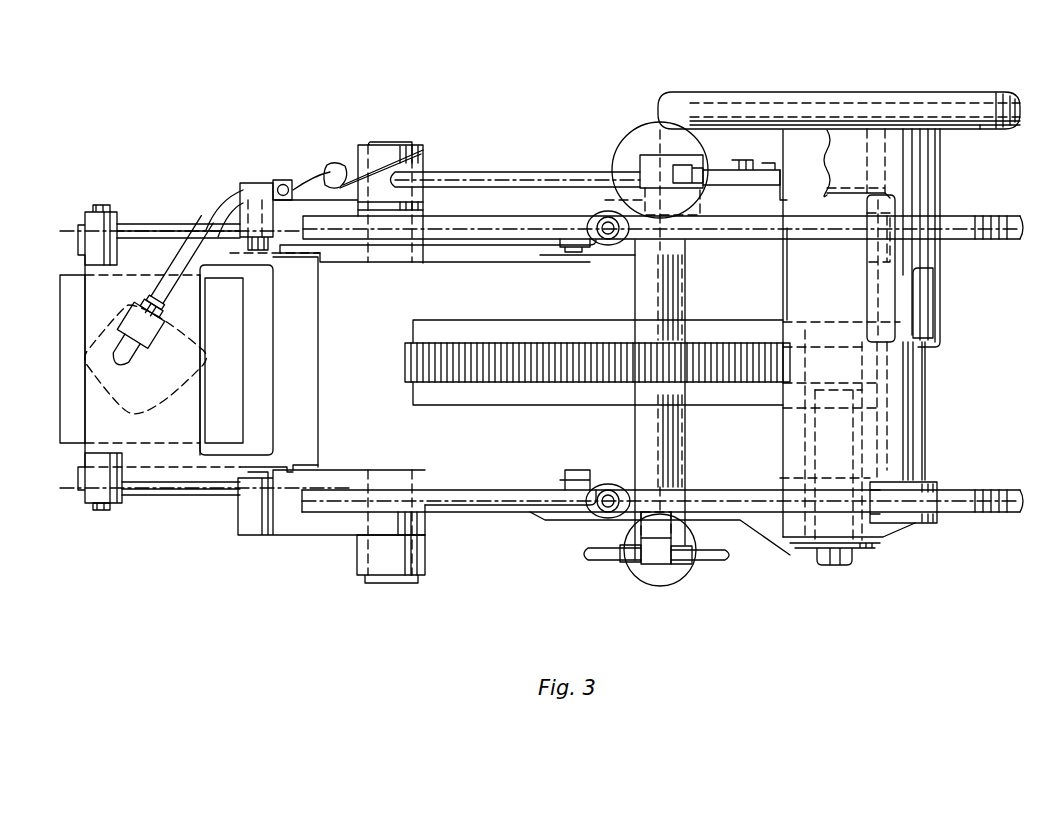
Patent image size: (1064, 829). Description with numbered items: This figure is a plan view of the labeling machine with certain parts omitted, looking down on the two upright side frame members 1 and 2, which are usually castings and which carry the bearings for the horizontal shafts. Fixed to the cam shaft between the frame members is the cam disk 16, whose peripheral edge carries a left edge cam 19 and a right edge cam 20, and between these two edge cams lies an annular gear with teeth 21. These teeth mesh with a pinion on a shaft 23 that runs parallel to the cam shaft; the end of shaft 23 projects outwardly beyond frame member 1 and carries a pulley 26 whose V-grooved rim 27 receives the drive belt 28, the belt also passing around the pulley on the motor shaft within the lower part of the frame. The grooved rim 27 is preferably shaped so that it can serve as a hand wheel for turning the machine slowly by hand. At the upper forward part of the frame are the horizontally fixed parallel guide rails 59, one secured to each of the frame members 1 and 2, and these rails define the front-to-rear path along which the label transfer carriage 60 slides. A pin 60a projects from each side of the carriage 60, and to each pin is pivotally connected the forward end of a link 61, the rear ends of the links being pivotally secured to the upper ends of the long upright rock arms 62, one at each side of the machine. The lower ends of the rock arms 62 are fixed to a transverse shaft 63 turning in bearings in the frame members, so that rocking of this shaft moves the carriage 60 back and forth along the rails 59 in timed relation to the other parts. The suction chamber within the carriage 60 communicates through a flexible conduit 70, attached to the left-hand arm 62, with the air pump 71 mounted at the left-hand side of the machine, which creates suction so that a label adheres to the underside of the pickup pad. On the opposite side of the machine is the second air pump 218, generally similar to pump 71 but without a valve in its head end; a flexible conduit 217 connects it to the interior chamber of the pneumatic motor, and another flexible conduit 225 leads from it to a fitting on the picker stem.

The side frame member 1 is at (470, 228).
The side frame member 2 is at (480, 507).
The cam disk 16 is at (574, 373).
The left edge cam 19 is at (432, 328).
The right edge cam 20 is at (420, 395).
The gear teeth 21 is at (408, 362).
The shaft 23 is at (850, 153).
The pulley 26 is at (985, 140).
The grooved rim 27 is at (988, 118).
The drive belt 28 is at (668, 111).
The guide rails 59 is at (440, 250).
The label transfer carriage 60 is at (100, 428).
The pin 60a is at (103, 511).
The link 61 is at (175, 228).
The rock arm 62 is at (325, 190).
The transverse shaft 63 is at (378, 578).
The flexible conduit 70 is at (508, 180).
The air pump 71 is at (628, 150).
The flexible conduit 217 is at (710, 561).
The second air pump 218 is at (668, 578).
The flexible conduit 225 is at (602, 560).